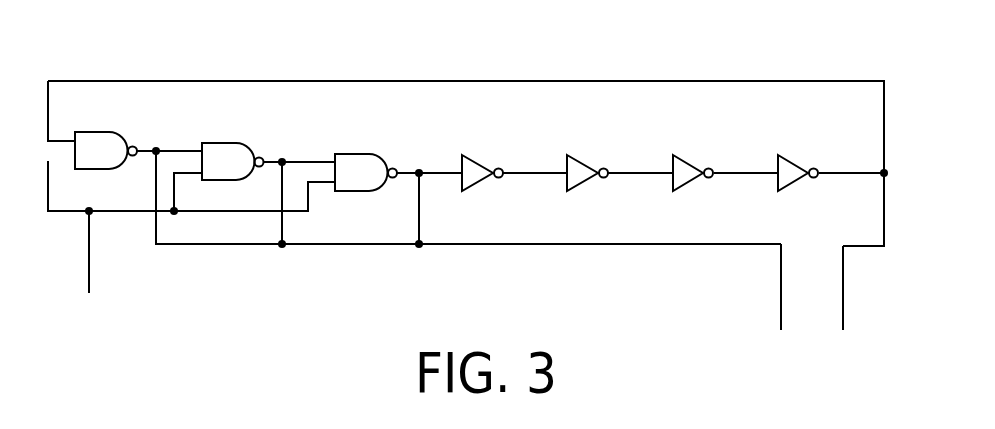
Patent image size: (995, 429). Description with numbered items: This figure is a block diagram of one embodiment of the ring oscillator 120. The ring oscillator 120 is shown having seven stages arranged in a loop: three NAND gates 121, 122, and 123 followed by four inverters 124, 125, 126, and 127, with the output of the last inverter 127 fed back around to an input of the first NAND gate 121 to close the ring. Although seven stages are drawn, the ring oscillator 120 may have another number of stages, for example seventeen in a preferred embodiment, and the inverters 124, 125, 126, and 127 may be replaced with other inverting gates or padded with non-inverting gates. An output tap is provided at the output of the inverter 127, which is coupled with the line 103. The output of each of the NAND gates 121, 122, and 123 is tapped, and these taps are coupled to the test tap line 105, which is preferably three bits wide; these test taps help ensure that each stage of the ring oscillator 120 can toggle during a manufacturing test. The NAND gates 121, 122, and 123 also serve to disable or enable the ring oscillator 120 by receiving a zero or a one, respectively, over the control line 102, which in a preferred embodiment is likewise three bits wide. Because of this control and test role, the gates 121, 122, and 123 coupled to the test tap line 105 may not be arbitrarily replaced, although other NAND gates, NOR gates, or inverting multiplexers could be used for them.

The ring oscillator 120 is at (486, 29).
The NAND gate 121 is at (92, 132).
The NAND gate 122 is at (217, 143).
The NAND gate 123 is at (351, 154).
The inverter 124 is at (480, 155).
The inverter 125 is at (584, 155).
The inverter 126 is at (689, 155).
The inverter 127 is at (795, 155).
The control line 102 is at (89, 266).
The test tap line 105 is at (781, 288).
The line 103 is at (843, 289).